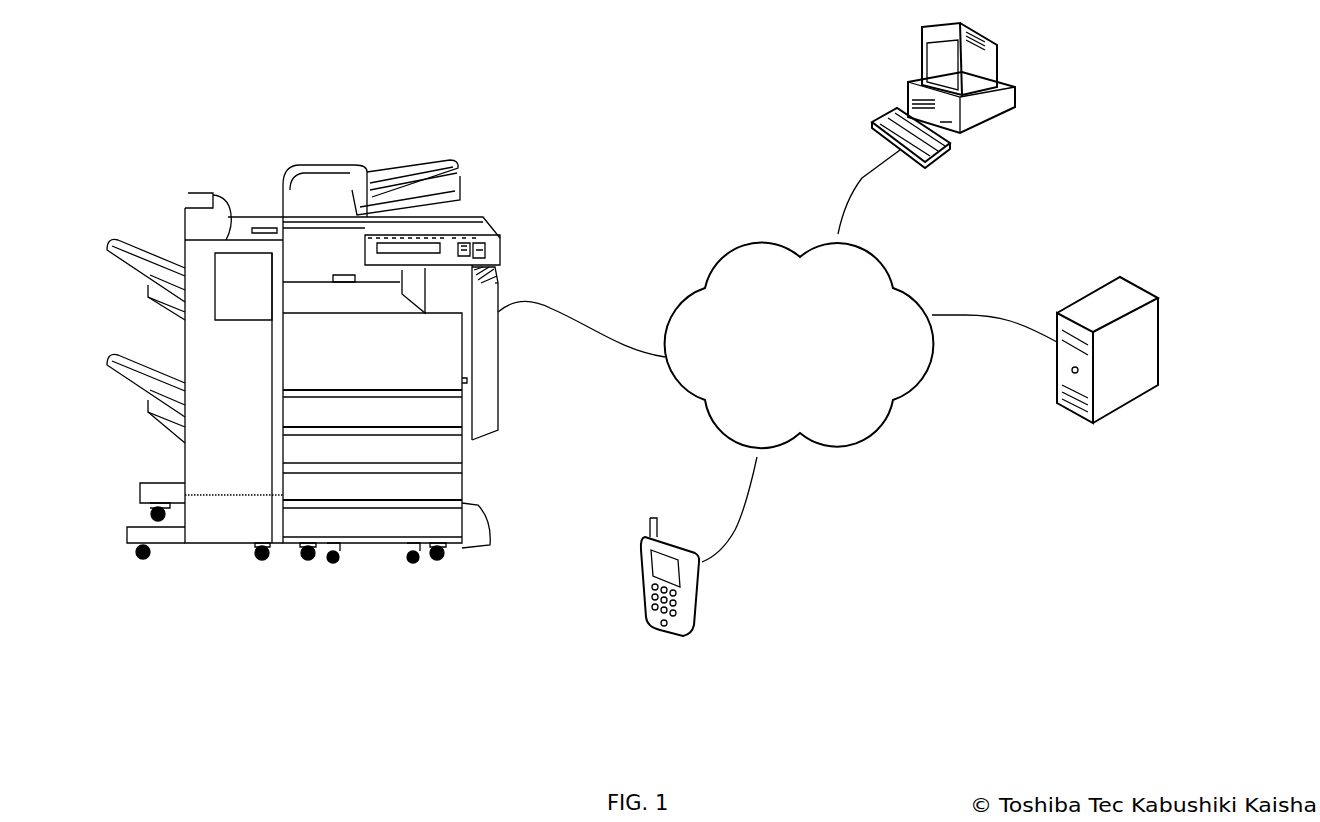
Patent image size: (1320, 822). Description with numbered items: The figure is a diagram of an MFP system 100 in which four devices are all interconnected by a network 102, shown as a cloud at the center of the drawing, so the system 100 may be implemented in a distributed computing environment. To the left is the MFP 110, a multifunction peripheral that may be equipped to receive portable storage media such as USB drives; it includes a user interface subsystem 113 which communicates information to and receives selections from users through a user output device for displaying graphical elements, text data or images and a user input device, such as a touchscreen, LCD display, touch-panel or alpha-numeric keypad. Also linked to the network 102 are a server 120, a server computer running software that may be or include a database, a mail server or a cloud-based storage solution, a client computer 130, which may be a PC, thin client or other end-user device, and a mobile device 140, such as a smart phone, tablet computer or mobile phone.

The MFP system 100 is at (687, 103).
The network 102 is at (799, 346).
The MFP 110 is at (397, 168).
The user interface subsystem 113 is at (440, 250).
The server 120 is at (1158, 338).
The client computer 130 is at (1017, 95).
The mobile device 140 is at (698, 593).